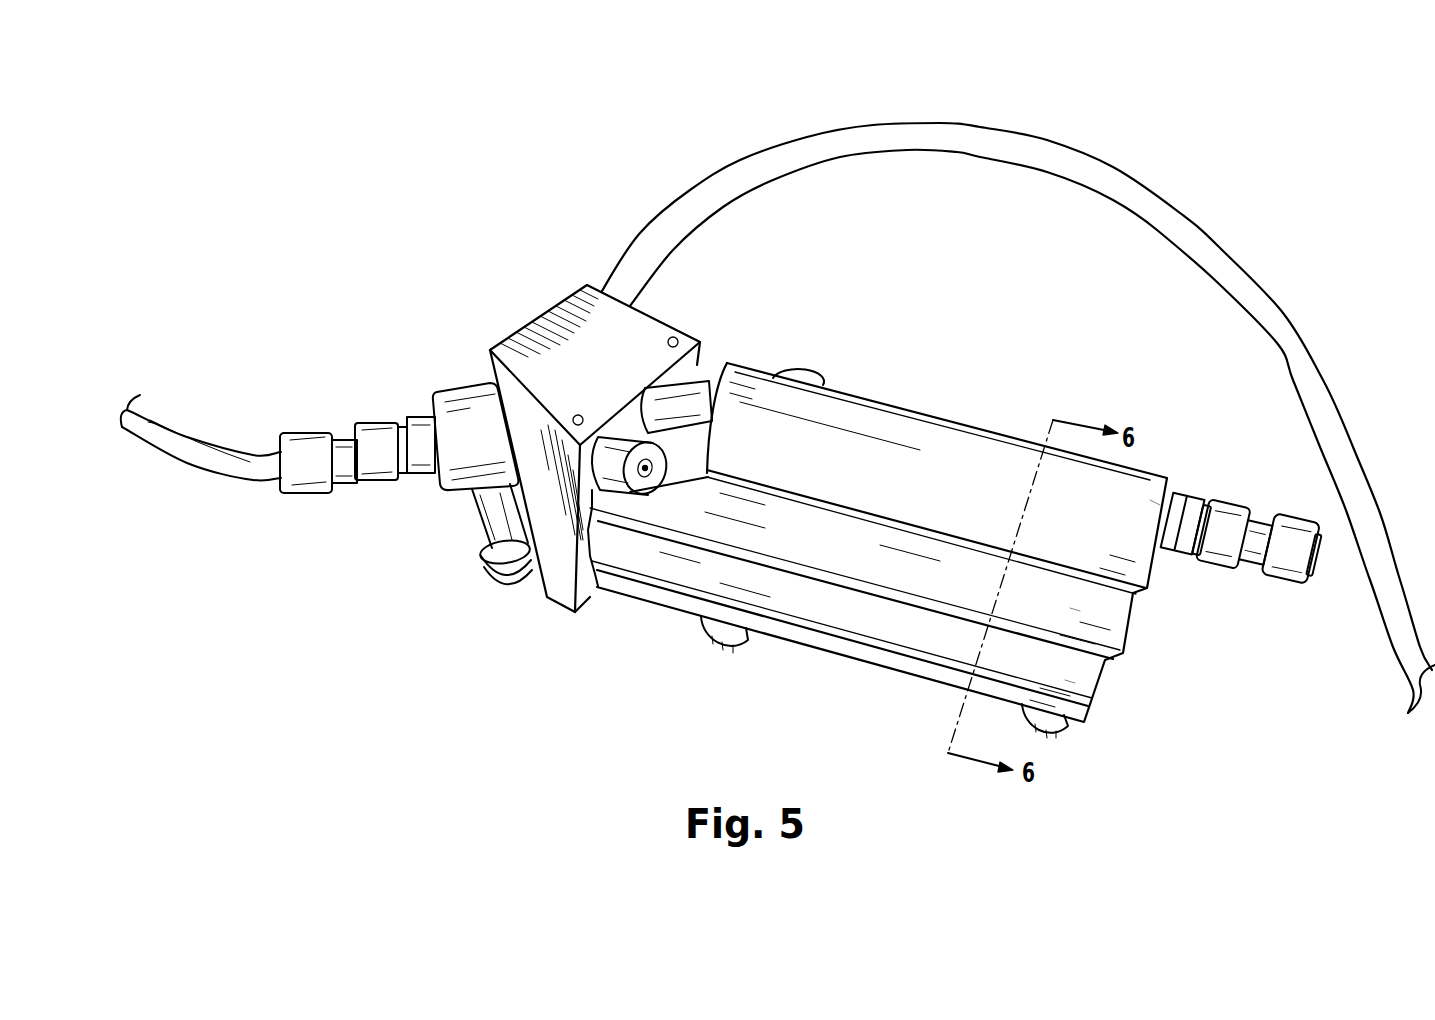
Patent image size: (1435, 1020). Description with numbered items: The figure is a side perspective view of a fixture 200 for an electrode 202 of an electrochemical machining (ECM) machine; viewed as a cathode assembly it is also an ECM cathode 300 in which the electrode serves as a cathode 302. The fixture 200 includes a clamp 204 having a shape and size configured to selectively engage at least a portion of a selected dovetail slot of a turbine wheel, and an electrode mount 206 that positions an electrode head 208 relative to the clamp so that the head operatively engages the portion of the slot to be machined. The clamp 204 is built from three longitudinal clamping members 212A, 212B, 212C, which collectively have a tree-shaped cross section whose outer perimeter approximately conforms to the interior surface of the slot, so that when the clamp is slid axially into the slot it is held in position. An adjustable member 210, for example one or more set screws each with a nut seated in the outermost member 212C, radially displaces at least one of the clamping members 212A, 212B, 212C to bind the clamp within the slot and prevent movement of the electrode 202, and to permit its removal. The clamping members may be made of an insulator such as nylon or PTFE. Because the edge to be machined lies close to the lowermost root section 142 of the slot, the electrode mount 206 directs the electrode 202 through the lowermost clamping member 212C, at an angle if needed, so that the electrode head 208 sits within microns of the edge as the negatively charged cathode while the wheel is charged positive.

The root section 142 is at (577, 387).
The fixture 200 is at (680, 197).
The ECM cathode 300 is at (996, 416).
The electrode 202 is at (687, 394).
The cathode 302 is at (701, 344).
The clamp 204 is at (1192, 428).
The electrode mount 206 is at (718, 455).
The electrode head 208 is at (792, 371).
The adjustable member 210 is at (1020, 710).
The longitudinal clamping member 212A is at (1063, 680).
The longitudinal clamping member 212B is at (1067, 610).
The longitudinal clamping member 212C is at (1147, 503).